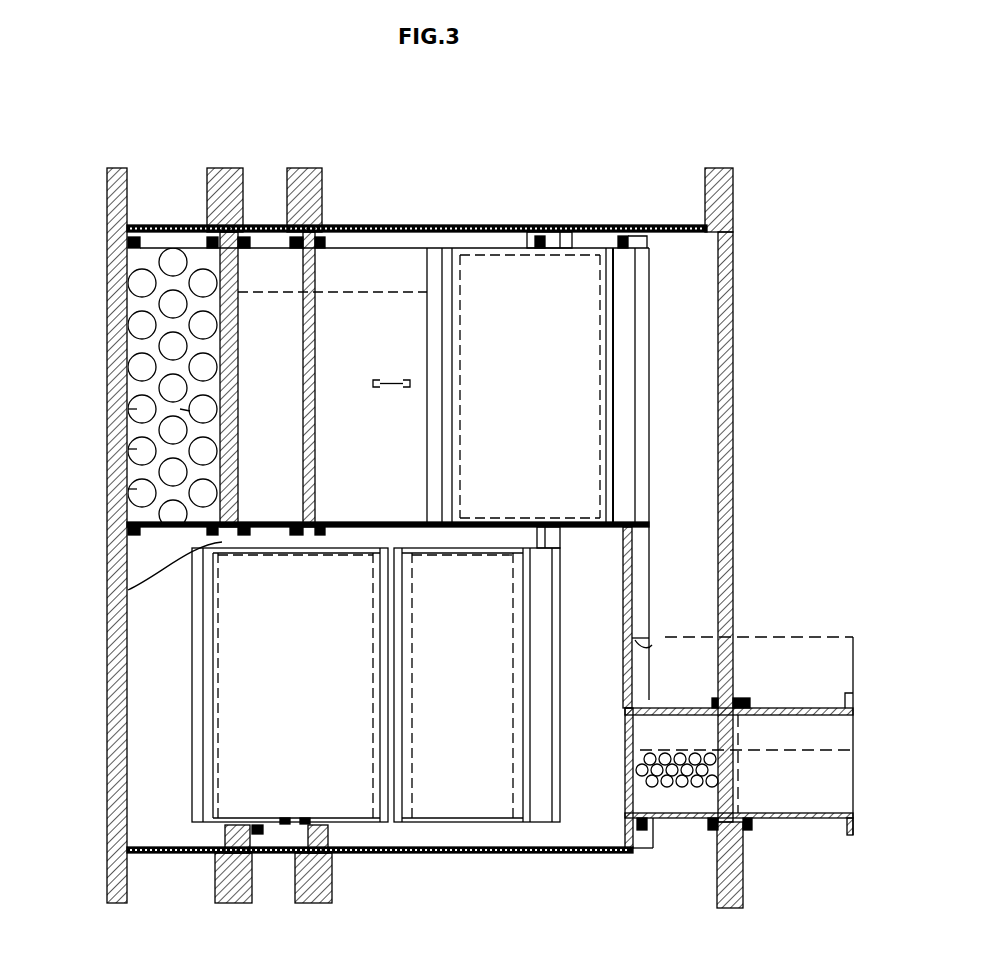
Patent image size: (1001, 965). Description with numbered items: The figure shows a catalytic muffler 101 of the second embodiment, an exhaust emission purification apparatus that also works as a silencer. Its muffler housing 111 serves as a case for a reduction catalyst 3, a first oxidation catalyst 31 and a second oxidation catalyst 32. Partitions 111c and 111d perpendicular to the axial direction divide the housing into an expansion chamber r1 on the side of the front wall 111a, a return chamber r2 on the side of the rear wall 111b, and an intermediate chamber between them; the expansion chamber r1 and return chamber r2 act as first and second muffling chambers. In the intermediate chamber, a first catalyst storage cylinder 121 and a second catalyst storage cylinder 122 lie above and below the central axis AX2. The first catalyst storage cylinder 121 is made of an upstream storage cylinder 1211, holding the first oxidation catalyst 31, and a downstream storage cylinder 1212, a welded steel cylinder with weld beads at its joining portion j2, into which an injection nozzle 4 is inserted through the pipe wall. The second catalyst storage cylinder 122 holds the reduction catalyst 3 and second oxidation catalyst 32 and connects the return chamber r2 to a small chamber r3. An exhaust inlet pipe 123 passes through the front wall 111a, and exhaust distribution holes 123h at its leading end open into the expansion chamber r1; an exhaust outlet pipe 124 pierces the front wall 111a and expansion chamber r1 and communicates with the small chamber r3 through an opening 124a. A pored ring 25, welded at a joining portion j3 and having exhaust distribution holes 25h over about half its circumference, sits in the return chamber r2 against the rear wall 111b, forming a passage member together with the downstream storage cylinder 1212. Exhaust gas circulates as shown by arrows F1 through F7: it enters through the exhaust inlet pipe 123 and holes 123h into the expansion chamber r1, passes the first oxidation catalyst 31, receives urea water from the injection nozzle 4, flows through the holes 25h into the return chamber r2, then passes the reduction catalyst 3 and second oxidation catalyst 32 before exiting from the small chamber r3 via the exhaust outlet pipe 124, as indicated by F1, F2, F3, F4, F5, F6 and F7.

The catalytic muffler 101 is at (768, 218).
The muffler housing 111 is at (495, 225).
The front wall 111a is at (733, 382).
The rear wall 111b is at (108, 535).
The partition 111c is at (649, 530).
The partition 111d is at (108, 592).
The first catalyst storage cylinder 121 is at (410, 248).
The upstream storage cylinder 1211 is at (610, 240).
The downstream storage cylinder 1212 is at (352, 247).
The second catalyst storage cylinder 122 is at (358, 827).
The exhaust inlet pipe 123 is at (850, 797).
The exhaust distribution holes 123h is at (695, 788).
The exhaust outlet pipe 124 is at (845, 657).
The opening 124a is at (651, 637).
The pored ring 25 is at (108, 368).
The exhaust distribution holes 25h is at (108, 427).
The reduction catalyst 3 is at (283, 827).
The first oxidation catalyst 31 is at (563, 234).
The second oxidation catalyst 32 is at (482, 825).
The injection nozzle 4 is at (398, 378).
The joining portion j2 is at (272, 292).
The joining portion j3 is at (160, 278).
The expansion chamber r1 is at (700, 305).
The return chamber r2 is at (150, 615).
The small chamber r3 is at (600, 845).
The central axis AX2 is at (20, 533).
The arrow F1 is at (822, 778).
The arrow F2 is at (686, 725).
The arrow F3 is at (677, 422).
The arrow F4 is at (237, 382).
The arrow F5 is at (262, 692).
The arrow F6 is at (523, 692).
The arrow F7 is at (822, 665).